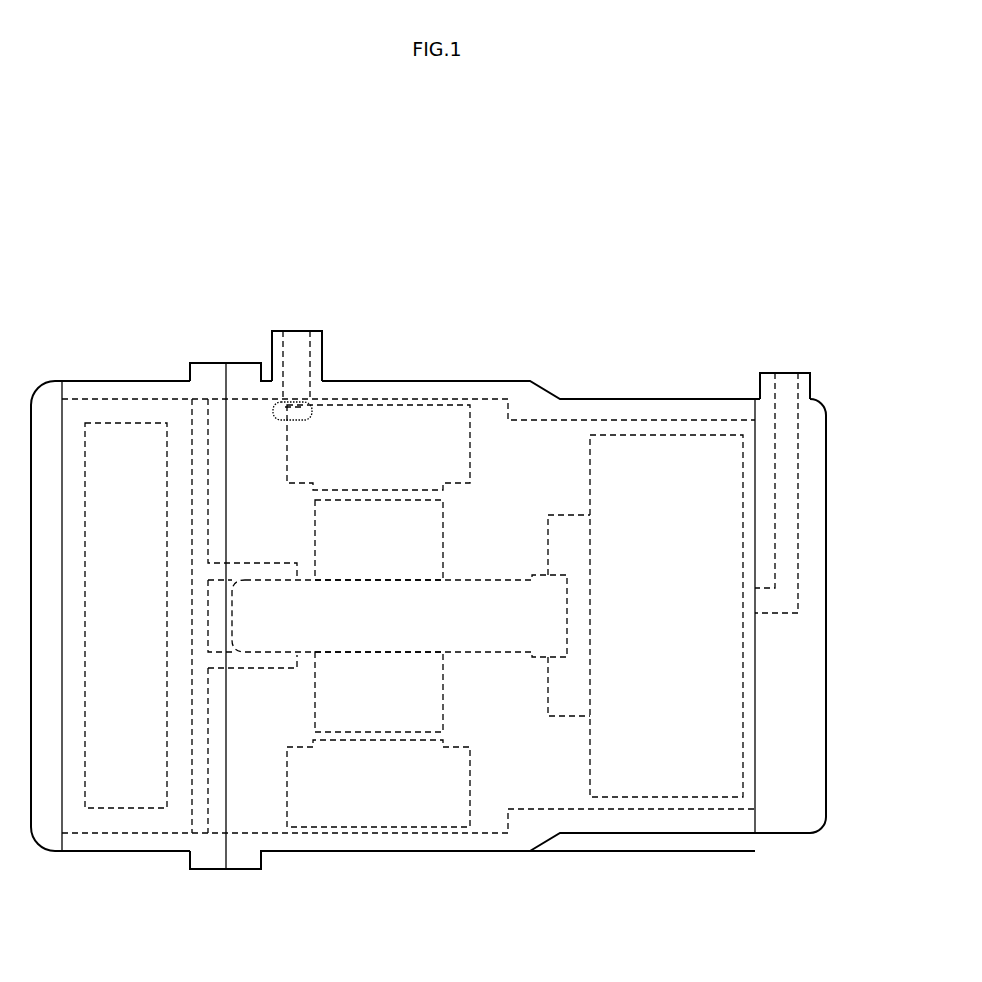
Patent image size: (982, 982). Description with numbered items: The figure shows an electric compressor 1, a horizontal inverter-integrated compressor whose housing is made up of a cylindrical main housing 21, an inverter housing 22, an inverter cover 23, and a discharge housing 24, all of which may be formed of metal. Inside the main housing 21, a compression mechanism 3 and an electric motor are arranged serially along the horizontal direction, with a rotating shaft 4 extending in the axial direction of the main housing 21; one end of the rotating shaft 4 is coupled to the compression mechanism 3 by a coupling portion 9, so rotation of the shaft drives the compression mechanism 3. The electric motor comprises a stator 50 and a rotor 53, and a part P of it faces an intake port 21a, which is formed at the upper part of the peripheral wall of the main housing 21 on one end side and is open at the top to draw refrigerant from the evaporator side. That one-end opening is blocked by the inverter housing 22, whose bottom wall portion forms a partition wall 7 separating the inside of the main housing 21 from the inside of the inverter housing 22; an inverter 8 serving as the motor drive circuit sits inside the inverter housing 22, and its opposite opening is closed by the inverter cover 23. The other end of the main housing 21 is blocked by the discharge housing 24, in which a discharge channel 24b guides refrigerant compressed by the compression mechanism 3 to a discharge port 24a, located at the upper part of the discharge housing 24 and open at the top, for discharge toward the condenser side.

The electric compressor 1 is at (446, 282).
The compression mechanism 3 is at (675, 435).
The rotating shaft 4 is at (492, 580).
The partition wall 7 is at (210, 758).
The inverter 8 is at (147, 423).
The coupling portion 9 is at (568, 716).
The main housing 21 is at (368, 851).
The intake port 21a is at (290, 332).
The inverter housing 22 is at (142, 852).
The inverter cover 23 is at (37, 838).
The discharge housing 24 is at (775, 833).
The discharge port 24a is at (797, 385).
The discharge channel 24b is at (800, 562).
The stator 50 is at (362, 403).
The rotor 53 is at (393, 500).
The part P is at (277, 421).